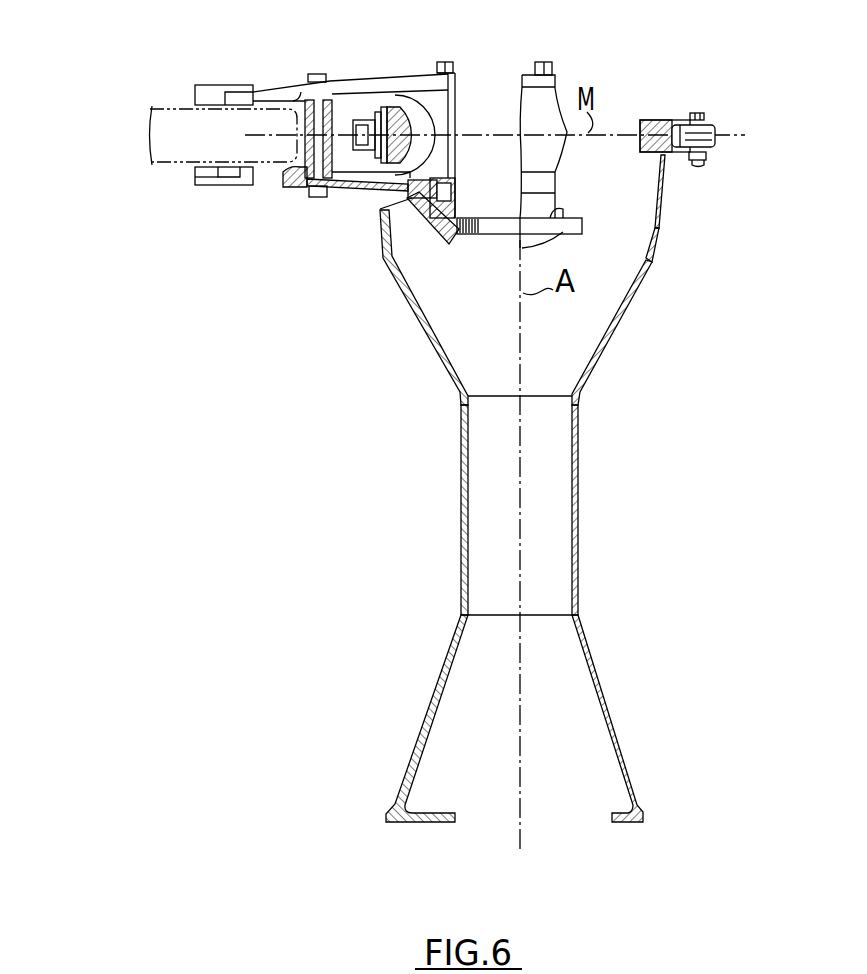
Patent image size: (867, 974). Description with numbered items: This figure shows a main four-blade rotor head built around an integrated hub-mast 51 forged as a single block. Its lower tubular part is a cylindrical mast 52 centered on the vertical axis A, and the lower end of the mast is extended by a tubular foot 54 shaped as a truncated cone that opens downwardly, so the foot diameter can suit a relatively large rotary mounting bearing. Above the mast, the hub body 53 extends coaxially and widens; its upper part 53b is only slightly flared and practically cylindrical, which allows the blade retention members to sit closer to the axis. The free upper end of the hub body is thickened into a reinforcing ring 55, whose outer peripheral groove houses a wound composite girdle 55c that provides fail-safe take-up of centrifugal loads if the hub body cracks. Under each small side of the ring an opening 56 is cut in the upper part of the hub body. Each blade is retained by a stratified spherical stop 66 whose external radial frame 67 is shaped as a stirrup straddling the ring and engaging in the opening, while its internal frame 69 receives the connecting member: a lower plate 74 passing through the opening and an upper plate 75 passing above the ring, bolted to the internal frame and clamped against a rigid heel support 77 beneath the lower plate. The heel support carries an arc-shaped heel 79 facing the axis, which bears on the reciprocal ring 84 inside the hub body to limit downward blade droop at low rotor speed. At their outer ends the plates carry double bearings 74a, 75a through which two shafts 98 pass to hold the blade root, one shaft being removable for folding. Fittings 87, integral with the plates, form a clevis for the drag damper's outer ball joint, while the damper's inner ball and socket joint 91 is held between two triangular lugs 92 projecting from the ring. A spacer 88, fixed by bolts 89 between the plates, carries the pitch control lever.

The integrated hub-mast 51 is at (582, 402).
The mast 52 is at (573, 482).
The hub body 53 is at (626, 300).
The upper part of hub body 53b is at (664, 213).
The foot 54 is at (603, 709).
The reinforcing ring 55 is at (651, 158).
The composite girdle 55c is at (660, 125).
The opening 56 is at (379, 205).
The stratified spherical stop 66 is at (422, 115).
The external radial frame 67 is at (401, 95).
The internal frame 69 is at (520, 118).
The lower plate 74 is at (355, 195).
The double bearing of lower plate 74a is at (292, 192).
The upper plate 75 is at (362, 82).
The double bearing of upper plate 75a is at (256, 94).
The heel support 77 is at (455, 212).
The heel 79 is at (452, 238).
The reciprocal ring 84 is at (468, 235).
The fitting 87 is at (190, 172).
The spacer 88 is at (336, 117).
The bolt 89 is at (315, 80).
The ball and socket joint 91 is at (708, 140).
The lug 92 is at (705, 117).
The shaft 98 is at (263, 172).